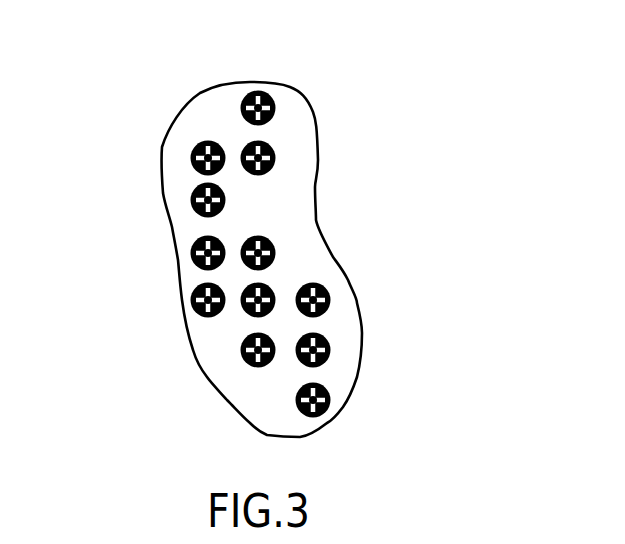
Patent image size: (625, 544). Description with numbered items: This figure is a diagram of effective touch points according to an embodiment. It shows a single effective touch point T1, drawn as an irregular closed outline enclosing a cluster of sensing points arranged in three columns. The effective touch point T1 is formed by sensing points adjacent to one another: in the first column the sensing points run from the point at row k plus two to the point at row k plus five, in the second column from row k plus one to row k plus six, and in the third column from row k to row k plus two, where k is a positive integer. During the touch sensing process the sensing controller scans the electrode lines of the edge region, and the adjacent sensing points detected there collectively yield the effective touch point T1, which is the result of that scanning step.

The effective touch point T1 is at (320, 183).